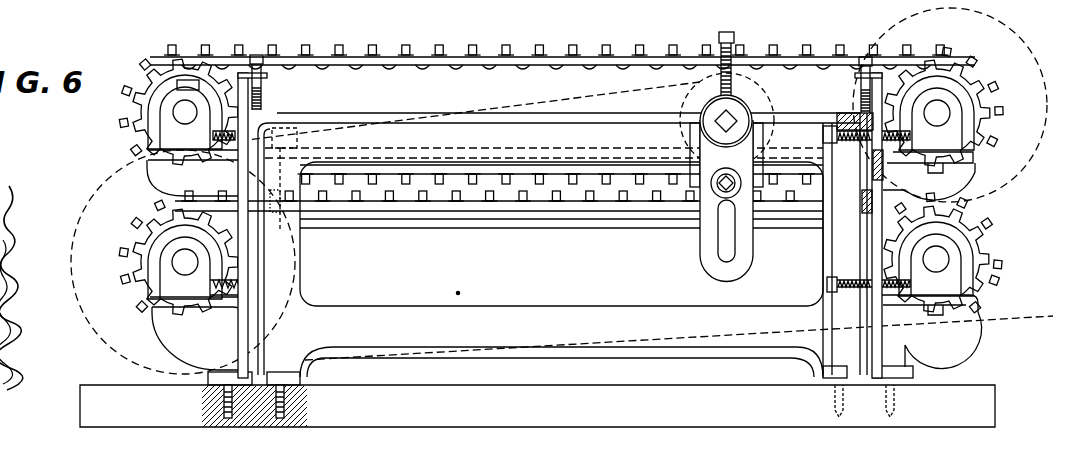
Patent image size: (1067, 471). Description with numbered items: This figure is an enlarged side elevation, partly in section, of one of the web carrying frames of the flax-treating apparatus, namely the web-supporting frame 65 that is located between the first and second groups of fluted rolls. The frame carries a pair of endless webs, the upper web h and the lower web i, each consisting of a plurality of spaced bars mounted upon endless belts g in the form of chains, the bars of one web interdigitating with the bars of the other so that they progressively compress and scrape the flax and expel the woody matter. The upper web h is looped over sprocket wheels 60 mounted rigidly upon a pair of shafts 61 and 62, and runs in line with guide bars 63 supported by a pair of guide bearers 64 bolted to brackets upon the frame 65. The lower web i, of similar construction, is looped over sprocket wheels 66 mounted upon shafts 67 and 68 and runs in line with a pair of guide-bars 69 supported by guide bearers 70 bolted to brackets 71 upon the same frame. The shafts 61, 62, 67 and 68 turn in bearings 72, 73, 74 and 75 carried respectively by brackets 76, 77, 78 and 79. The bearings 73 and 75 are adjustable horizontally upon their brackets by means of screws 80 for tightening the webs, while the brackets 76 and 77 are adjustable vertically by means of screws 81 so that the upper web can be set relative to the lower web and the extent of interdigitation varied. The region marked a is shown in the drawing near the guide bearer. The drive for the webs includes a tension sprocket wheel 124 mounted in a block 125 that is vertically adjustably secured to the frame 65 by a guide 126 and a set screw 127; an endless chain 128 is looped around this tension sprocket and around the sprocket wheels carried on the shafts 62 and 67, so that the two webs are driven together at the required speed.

The sprocket wheels 60 is at (152, 84).
The shaft 61 is at (183, 108).
The shaft 62 is at (940, 112).
The guide bars 63 is at (326, 156).
The guide bearers 64 is at (285, 128).
The supporting frame 65 is at (425, 322).
The sprocket wheels 66 is at (152, 252).
The shaft 67 is at (182, 265).
The shaft 68 is at (940, 262).
The guide-bars 69 is at (388, 221).
The guide bearers 70 is at (561, 234).
The brackets 71 is at (562, 244).
The bearing 72 is at (168, 118).
The bearing 73 is at (165, 258).
The bearing 74 is at (955, 127).
The bearing 75 is at (970, 250).
The bracket 76 is at (158, 168).
The bracket 77 is at (955, 175).
The bracket 78 is at (177, 322).
The bracket 79 is at (950, 323).
The screws 80 is at (232, 136).
The screws 81 is at (255, 108).
The tension sprocket wheel 124 is at (690, 92).
The block 125 is at (710, 165).
The guide 126 is at (690, 142).
The set screw 127 is at (727, 52).
The endless chain 128 is at (1018, 318).
The hidden portion a is at (544, 175).
The endless belts g is at (543, 58).
The upper web h is at (513, 175).
The lower web i is at (526, 197).